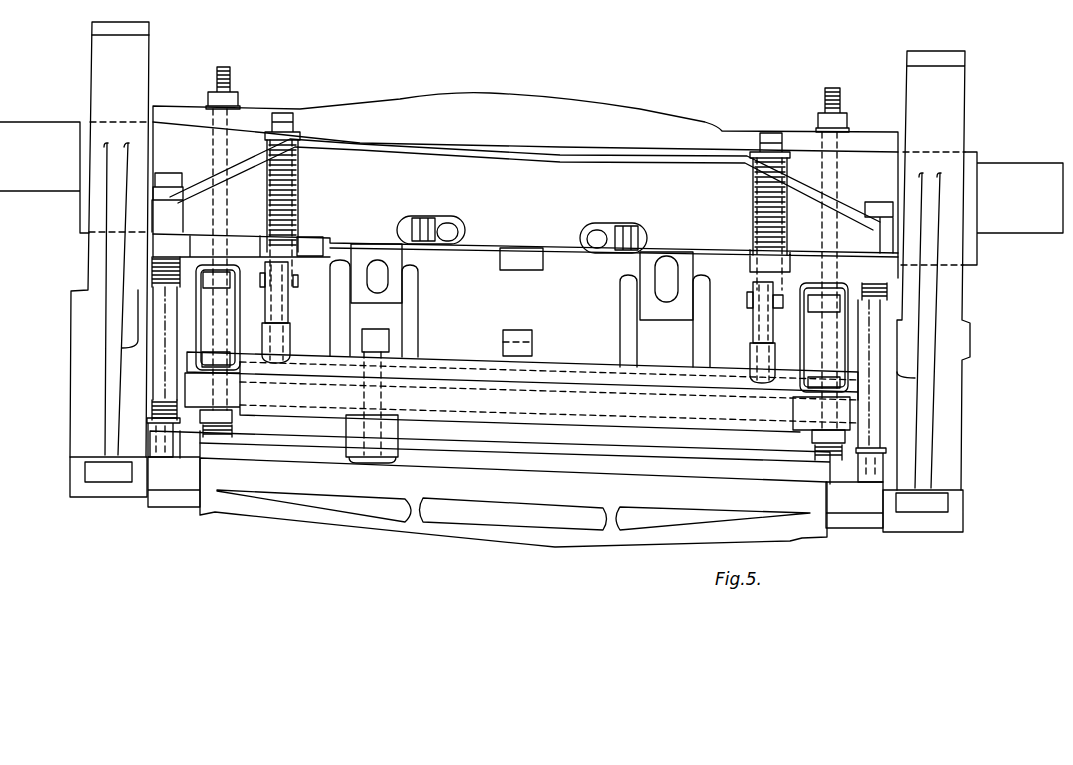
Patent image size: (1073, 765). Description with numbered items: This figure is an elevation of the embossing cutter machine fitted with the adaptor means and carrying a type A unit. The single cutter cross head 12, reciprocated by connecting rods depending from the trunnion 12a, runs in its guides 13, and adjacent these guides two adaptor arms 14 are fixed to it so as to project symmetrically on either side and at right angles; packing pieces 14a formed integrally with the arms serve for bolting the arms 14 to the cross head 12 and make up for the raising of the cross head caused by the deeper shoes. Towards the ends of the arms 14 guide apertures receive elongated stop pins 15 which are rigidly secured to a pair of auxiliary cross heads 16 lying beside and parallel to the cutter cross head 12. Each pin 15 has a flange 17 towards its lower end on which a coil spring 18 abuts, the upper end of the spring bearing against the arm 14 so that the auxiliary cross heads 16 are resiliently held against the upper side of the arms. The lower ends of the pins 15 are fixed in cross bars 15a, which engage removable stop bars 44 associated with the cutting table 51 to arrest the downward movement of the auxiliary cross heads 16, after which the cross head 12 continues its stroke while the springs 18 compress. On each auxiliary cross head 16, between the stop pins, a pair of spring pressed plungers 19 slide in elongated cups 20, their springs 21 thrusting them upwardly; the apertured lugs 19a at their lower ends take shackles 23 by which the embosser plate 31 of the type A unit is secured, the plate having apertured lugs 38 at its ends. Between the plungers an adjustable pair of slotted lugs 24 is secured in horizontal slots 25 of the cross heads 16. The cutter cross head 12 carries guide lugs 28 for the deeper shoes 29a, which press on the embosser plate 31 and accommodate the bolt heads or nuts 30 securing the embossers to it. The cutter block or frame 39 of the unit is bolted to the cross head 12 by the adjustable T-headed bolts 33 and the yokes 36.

The cutter cross head 12 is at (563, 118).
The trunnion 12a is at (44, 177).
The guides 13 is at (897, 322).
The adaptor arms 14 is at (168, 245).
The packing pieces 14a is at (320, 243).
The stop pins 15 is at (168, 173).
The cross bars 15a is at (147, 460).
The auxiliary cross heads 16 is at (492, 160).
The flanges or shoulders 17 is at (150, 424).
The coil springs 18 is at (103, 252).
The spring pressed plungers or bolts 19 is at (283, 117).
The apertured lugs 19a is at (280, 277).
The recesses or elongated cups 20 is at (266, 180).
The springs 21 is at (300, 200).
The shackles 23 is at (278, 300).
The slotted lugs 24 is at (428, 218).
The horizontal slots 25 is at (450, 233).
The guide lugs 28 is at (383, 240).
The deeper shoes 29a is at (412, 284).
The bolt heads or nuts 30 is at (378, 333).
The embosser plate 31 is at (450, 357).
The T-headed bolts 33 is at (236, 94).
The yoke pieces 36 is at (522, 328).
The apertured lugs 38 is at (280, 337).
The cutter block or frame 39 is at (623, 407).
The stop bars 44 is at (165, 447).
The cutting table 51 is at (253, 472).